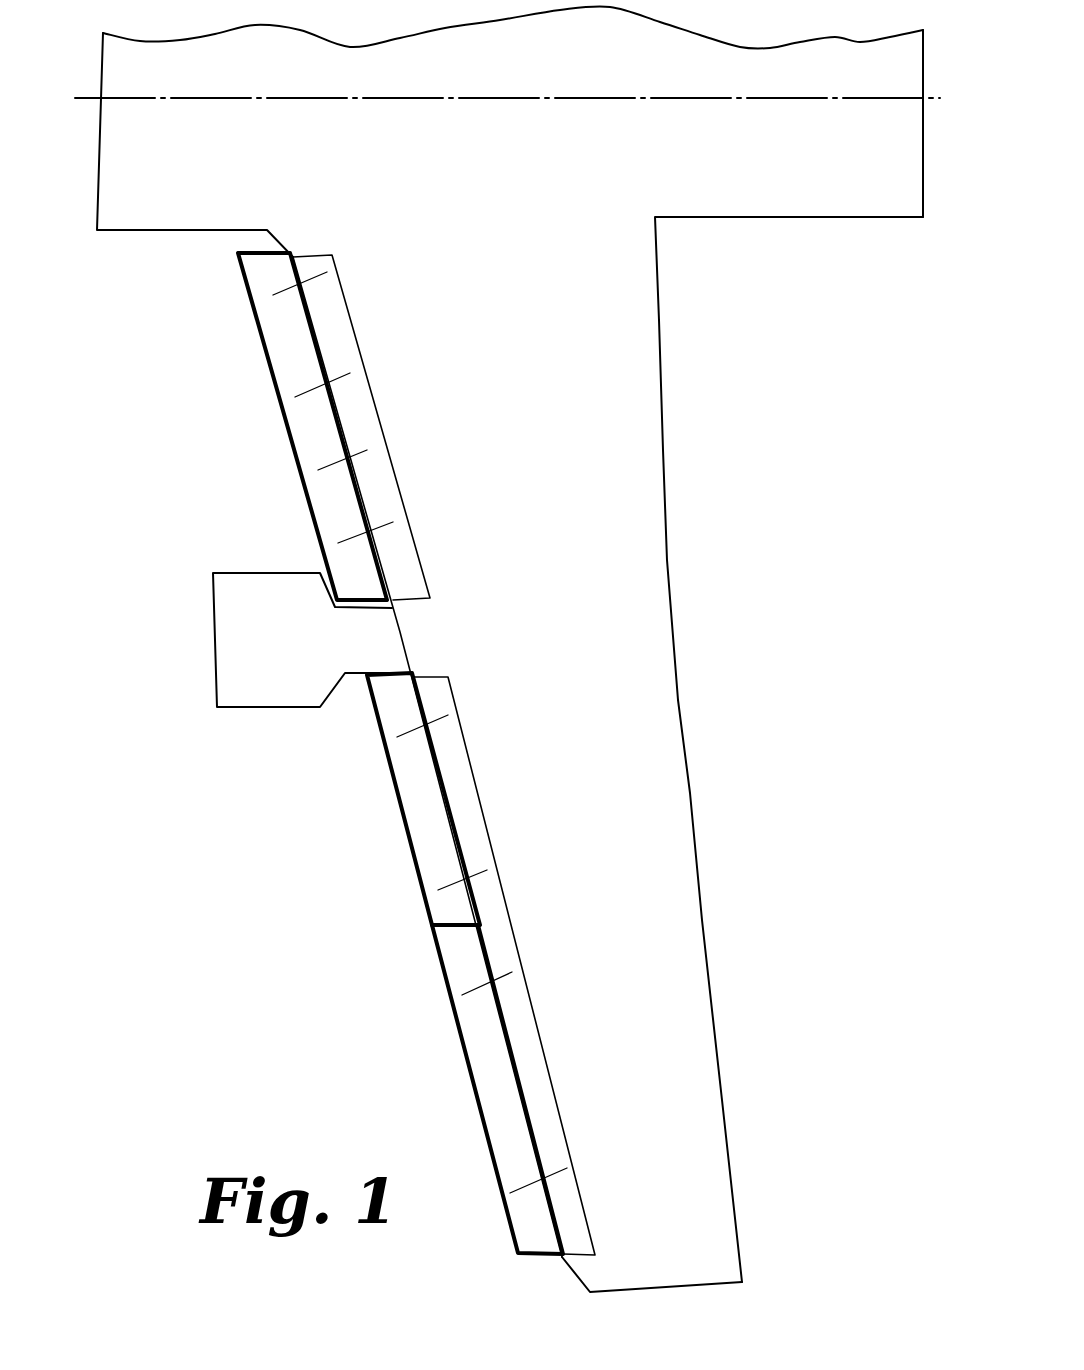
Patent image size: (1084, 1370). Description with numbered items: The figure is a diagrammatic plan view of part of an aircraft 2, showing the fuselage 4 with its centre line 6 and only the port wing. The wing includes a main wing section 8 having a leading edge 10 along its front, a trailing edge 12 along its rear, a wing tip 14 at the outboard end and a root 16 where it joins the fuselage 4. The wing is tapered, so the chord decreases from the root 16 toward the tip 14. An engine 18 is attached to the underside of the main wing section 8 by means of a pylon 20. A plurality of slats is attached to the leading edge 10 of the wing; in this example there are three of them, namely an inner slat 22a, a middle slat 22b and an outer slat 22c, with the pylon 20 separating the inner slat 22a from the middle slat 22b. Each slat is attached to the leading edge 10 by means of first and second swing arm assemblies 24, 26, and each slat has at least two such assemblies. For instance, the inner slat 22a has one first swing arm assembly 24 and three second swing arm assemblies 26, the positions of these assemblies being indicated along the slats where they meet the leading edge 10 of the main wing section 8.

The aircraft 2 is at (824, 190).
The fuselage 4 is at (135, 232).
The centre line 6 is at (683, 98).
The main wing section 8 is at (633, 623).
The leading edge 10 is at (462, 797).
The trailing edge 12 is at (688, 793).
The wing tip 14 is at (703, 1288).
The root 16 is at (620, 235).
The engine 18 is at (233, 655).
The pylon 20 is at (380, 647).
The inner slat 22a is at (281, 358).
The middle slat 22b is at (422, 823).
The outer slat 22c is at (485, 1073).
The first swing arm assembly 24 is at (318, 277).
The second swing arm assembly 26 is at (343, 377).